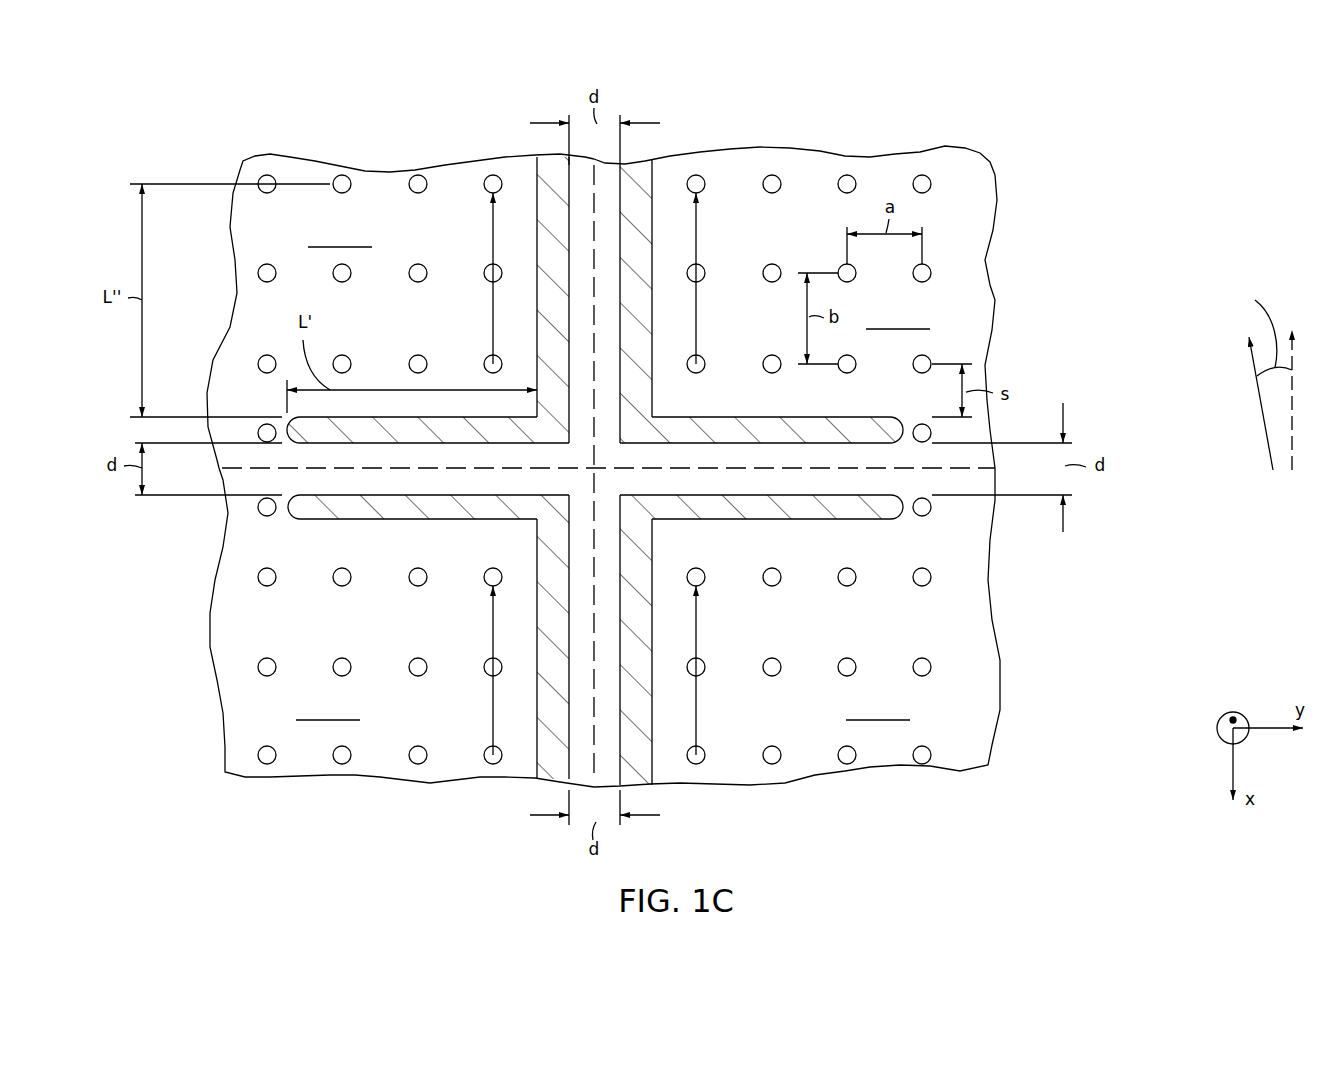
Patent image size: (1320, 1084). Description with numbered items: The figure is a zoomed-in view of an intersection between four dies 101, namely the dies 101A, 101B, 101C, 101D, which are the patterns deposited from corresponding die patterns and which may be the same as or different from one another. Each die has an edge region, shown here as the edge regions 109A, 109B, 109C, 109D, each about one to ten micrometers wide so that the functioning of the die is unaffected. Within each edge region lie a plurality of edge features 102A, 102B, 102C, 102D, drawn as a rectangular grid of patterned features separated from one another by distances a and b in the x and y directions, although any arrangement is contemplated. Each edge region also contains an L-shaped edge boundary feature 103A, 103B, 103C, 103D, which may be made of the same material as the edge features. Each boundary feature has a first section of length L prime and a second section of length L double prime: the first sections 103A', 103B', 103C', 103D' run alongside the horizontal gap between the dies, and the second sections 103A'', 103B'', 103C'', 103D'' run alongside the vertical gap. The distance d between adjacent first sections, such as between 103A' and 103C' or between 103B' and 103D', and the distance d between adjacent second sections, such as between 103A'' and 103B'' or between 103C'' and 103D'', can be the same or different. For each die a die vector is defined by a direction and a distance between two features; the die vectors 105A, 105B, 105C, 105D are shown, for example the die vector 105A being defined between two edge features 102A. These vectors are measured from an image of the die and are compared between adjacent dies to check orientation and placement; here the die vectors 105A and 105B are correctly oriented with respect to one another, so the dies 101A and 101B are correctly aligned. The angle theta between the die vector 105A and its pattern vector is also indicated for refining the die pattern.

The dies 101 is at (1065, 158).
The die 101A is at (218, 222).
The die 101B is at (1010, 180).
The die 101C is at (193, 649).
The die 101D is at (998, 648).
The edge features 102A is at (413, 180).
The edge features 102B is at (932, 356).
The edge features 102C is at (268, 763).
The edge features 102D is at (924, 764).
The edge boundary feature 103A is at (428, 281).
The first section 103A' is at (428, 417).
The second section 103A'' is at (500, 281).
The edge boundary feature 103B is at (761, 284).
The first section 103B' is at (761, 414).
The second section 103B'' is at (676, 284).
The edge boundary feature 103C is at (426, 663).
The first section 103C' is at (428, 563).
The second section 103C'' is at (501, 663).
The edge boundary feature 103D is at (761, 664).
The first section 103D' is at (761, 526).
The second section 103D'' is at (693, 664).
The die vector 105A is at (490, 240).
The die vector 105B is at (698, 250).
The die vector 105C is at (493, 622).
The die vector 105D is at (697, 642).
The edge region 109A is at (340, 232).
The edge region 109B is at (898, 314).
The edge region 109C is at (327, 705).
The edge region 109D is at (878, 705).